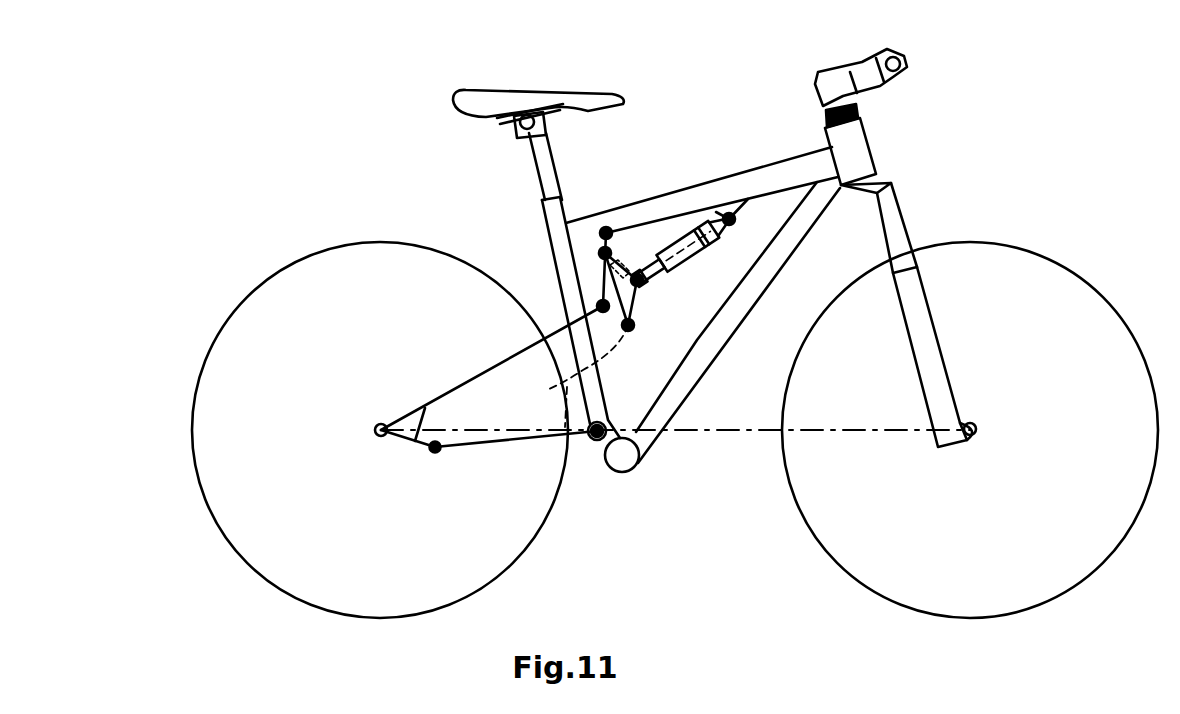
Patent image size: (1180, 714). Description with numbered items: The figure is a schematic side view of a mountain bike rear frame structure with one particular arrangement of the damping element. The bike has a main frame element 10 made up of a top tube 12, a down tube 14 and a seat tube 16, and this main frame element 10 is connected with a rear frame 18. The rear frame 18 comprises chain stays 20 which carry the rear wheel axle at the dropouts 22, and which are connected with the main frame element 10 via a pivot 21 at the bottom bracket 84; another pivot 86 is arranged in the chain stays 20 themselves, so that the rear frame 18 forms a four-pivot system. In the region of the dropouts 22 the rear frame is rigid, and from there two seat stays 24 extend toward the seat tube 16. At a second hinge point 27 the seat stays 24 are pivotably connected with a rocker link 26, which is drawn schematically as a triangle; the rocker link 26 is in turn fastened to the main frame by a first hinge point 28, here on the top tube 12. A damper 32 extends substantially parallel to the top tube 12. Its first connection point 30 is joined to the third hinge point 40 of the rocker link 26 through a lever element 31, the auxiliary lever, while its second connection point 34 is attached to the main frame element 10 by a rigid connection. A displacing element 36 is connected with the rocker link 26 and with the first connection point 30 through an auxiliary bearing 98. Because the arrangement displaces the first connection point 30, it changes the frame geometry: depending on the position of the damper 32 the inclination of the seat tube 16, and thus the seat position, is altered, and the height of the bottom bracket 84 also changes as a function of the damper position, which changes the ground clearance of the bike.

The main frame element 10 is at (686, 162).
The top tube 12 is at (760, 170).
The down tube 14 is at (718, 325).
The seat tube 16 is at (558, 240).
The rear frame 18 is at (410, 352).
The chain stays 20 is at (502, 443).
The pivot 21 is at (604, 442).
The dropouts 22 is at (380, 437).
The seat stays 24 is at (487, 367).
The rocker link 26 is at (600, 283).
The second hinge point 27 is at (598, 304).
The first hinge point 28 is at (607, 229).
The first connection point 30 is at (670, 257).
The lever element 31 is at (632, 298).
The damper 32 is at (698, 250).
The second connection point 34 is at (729, 216).
The displacing element 36 is at (569, 376).
The third hinge point 40 is at (630, 330).
The bottom bracket 84 is at (622, 457).
The pivot 86 is at (434, 455).
The auxiliary bearing 98 is at (598, 251).